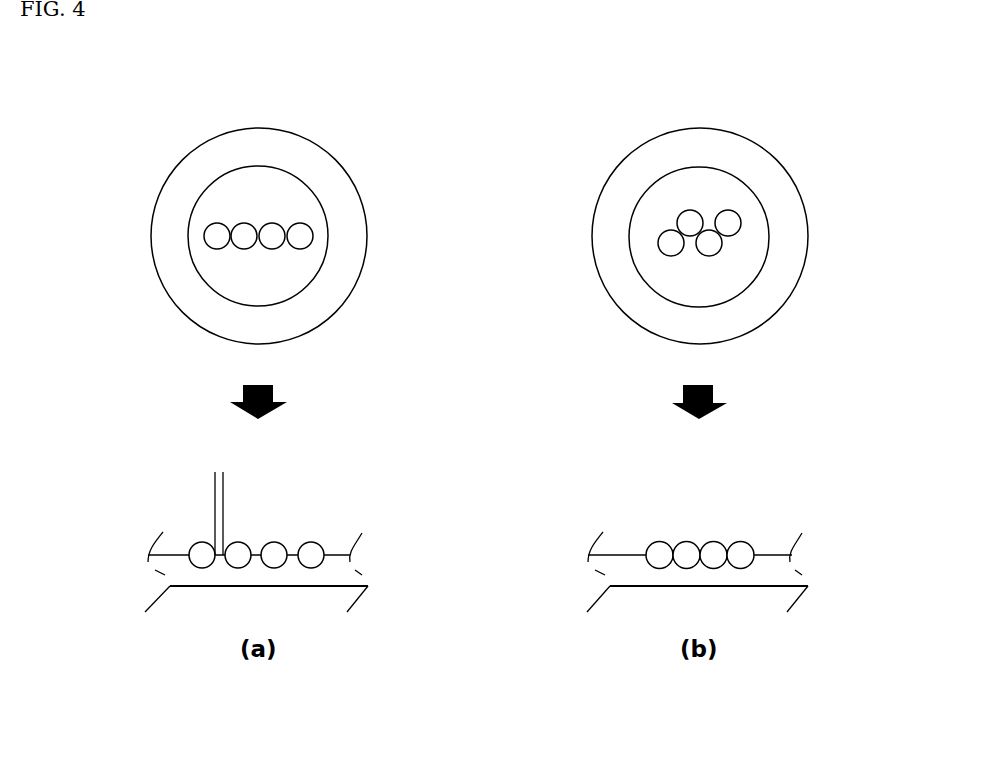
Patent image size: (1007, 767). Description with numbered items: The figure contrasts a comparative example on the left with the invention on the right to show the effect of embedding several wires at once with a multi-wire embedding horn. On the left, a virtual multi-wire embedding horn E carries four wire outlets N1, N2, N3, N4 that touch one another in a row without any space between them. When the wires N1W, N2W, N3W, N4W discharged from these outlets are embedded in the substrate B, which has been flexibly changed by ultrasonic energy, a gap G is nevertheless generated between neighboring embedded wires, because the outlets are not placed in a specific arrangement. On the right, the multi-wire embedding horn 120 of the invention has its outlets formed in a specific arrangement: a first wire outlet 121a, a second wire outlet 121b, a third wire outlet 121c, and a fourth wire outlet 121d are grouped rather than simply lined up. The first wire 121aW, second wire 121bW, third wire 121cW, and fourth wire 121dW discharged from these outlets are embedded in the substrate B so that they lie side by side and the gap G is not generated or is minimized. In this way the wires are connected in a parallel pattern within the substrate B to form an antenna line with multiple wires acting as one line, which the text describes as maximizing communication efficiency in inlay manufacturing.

The virtual multi-wire embedding horn E is at (170, 128).
The wire outlet N1 is at (217, 233).
The wire outlet N2 is at (242, 232).
The wire outlet N3 is at (272, 232).
The wire outlet N4 is at (307, 233).
The multi-wire embedding horn 120 is at (747, 137).
The first wire outlet 121a is at (670, 245).
The second wire outlet 121b is at (685, 225).
The third wire outlet 121c is at (727, 222).
The fourth wire outlet 121d is at (710, 245).
The substrate B is at (172, 562).
The wire N1W is at (202, 552).
The wire N2W is at (237, 560).
The wire N3W is at (272, 552).
The wire N4W is at (311, 552).
The gap G is at (188, 478).
The first wire 121aW is at (659, 560).
The second wire 121bW is at (687, 552).
The third wire 121cW is at (713, 552).
The fourth wire 121dW is at (741, 552).